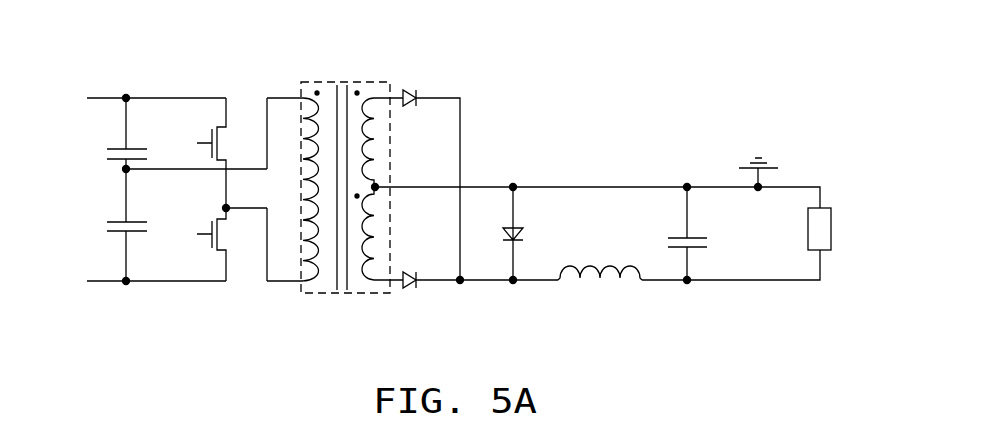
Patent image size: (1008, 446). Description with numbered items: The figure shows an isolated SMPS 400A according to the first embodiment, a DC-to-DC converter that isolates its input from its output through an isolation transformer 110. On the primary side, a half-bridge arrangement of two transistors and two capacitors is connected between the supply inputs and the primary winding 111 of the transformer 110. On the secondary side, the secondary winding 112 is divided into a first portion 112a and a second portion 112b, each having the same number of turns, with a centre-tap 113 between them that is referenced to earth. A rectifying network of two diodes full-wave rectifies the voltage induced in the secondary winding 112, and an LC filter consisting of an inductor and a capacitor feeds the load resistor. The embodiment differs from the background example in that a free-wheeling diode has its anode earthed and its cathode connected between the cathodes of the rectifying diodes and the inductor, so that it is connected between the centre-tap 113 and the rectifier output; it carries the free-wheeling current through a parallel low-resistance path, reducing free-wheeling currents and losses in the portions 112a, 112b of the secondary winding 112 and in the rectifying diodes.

The isolated SMPS 400A is at (536, 104).
The isolation transformer 110 is at (343, 80).
The primary winding 111 is at (318, 298).
The secondary winding 112 is at (370, 298).
The first portion of the secondary winding 112a is at (379, 147).
The second portion of the secondary winding 112b is at (385, 236).
The centre-tap 113 is at (390, 192).